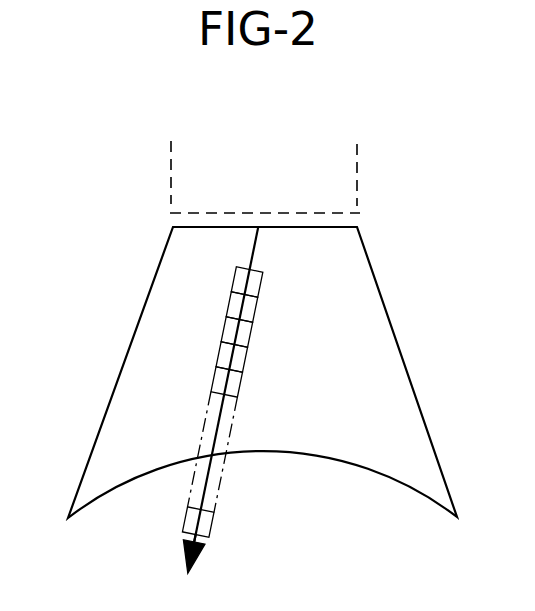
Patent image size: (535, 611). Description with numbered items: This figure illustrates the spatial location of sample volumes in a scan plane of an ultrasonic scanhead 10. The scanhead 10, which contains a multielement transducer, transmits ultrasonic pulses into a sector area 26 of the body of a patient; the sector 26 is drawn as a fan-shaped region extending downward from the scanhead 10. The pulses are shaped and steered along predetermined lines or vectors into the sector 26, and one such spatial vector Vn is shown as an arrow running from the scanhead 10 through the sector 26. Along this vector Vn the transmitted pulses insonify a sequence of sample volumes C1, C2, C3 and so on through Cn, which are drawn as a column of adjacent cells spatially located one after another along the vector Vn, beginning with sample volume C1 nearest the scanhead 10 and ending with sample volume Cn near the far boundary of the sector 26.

The scanhead 10 is at (171, 174).
The sector area 26 is at (122, 372).
The sample volume C1 is at (262, 278).
The sample volume C2 is at (258, 305).
The sample volume C3 is at (250, 334).
The sample volume Cn is at (215, 518).
The spatial vector Vn is at (197, 541).